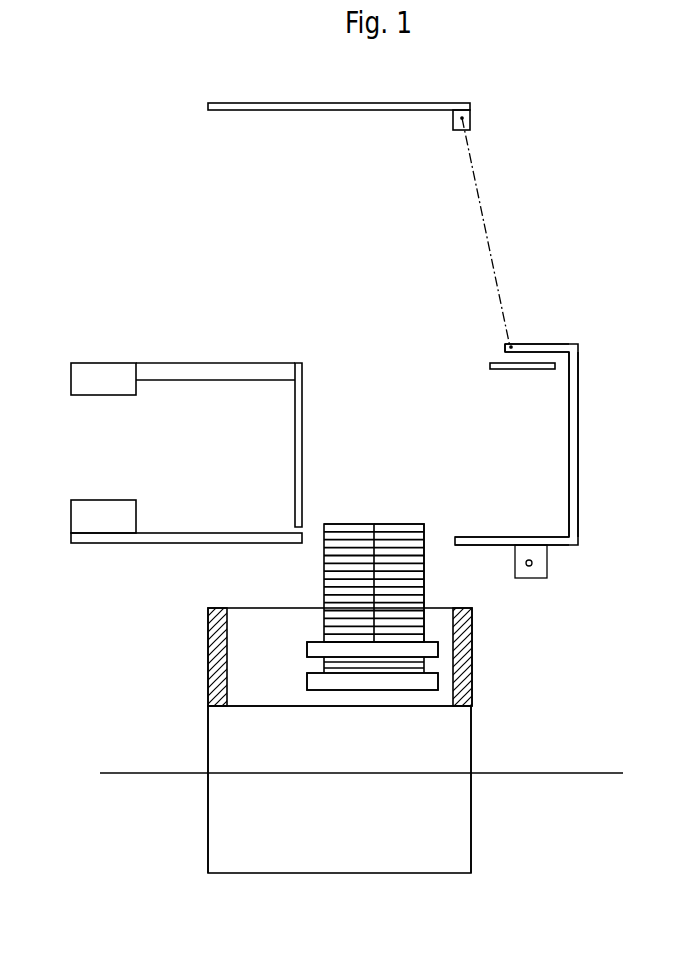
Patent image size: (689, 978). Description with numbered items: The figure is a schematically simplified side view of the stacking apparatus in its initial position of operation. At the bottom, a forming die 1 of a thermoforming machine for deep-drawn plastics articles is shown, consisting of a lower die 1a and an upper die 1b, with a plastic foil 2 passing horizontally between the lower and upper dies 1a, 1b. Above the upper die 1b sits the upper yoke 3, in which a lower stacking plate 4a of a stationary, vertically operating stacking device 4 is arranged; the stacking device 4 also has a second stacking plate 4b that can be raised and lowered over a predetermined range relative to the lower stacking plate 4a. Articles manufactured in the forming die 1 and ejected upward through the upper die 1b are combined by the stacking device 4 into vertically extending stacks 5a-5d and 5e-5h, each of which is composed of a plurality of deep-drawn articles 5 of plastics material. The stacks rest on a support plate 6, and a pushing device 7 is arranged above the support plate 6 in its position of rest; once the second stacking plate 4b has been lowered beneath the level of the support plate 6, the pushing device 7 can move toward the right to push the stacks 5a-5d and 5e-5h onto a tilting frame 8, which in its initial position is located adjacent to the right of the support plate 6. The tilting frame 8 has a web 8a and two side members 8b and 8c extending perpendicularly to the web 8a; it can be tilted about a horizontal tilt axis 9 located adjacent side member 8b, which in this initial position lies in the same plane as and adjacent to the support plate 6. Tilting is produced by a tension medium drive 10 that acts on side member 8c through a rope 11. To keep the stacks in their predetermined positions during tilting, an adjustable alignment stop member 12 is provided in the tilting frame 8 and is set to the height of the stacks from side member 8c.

The forming die 1 is at (218, 753).
The lower die 1a is at (458, 817).
The upper die 1b is at (458, 740).
The plastic foil 2 is at (557, 773).
The upper yoke 3 is at (472, 657).
The stacking device 4 is at (317, 650).
The lower stacking plate 4a is at (430, 682).
The second stacking plate 4b is at (435, 647).
The deep-drawn articles 5 is at (330, 625).
The stacks of articles 5a-5d is at (337, 525).
The stacks of articles 5e-5h is at (408, 523).
The support plate 6 is at (198, 535).
The pushing device 7 is at (267, 372).
The tilting frame 8 is at (575, 522).
The web 8a is at (577, 465).
The side member 8b is at (552, 546).
The side member 8c is at (529, 347).
The tilt axis 9 is at (531, 566).
The tension medium drive 10 is at (473, 173).
The rope 11 is at (495, 263).
The alignment stop member 12 is at (547, 363).